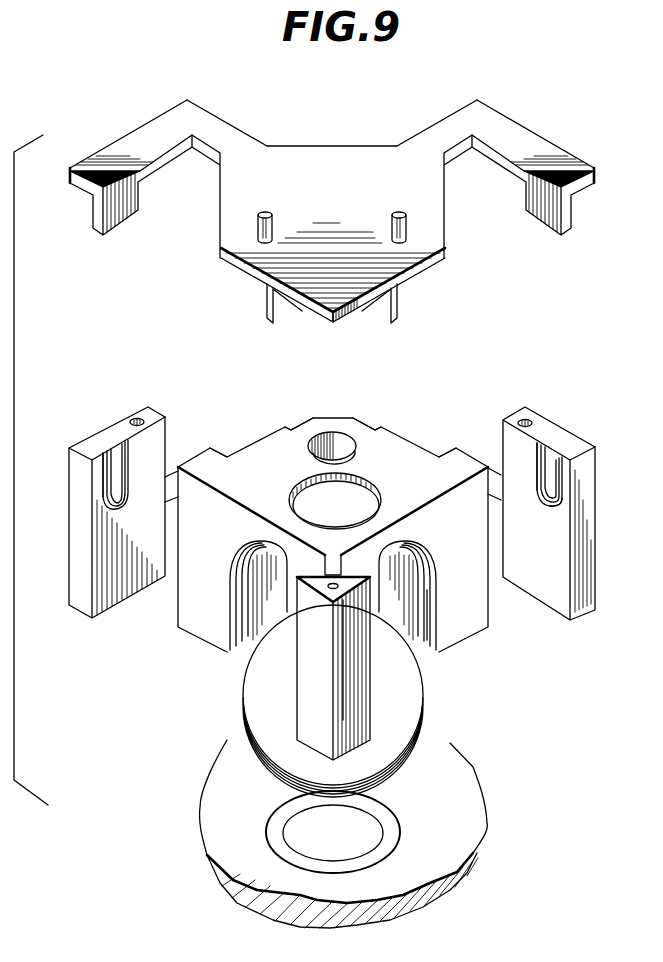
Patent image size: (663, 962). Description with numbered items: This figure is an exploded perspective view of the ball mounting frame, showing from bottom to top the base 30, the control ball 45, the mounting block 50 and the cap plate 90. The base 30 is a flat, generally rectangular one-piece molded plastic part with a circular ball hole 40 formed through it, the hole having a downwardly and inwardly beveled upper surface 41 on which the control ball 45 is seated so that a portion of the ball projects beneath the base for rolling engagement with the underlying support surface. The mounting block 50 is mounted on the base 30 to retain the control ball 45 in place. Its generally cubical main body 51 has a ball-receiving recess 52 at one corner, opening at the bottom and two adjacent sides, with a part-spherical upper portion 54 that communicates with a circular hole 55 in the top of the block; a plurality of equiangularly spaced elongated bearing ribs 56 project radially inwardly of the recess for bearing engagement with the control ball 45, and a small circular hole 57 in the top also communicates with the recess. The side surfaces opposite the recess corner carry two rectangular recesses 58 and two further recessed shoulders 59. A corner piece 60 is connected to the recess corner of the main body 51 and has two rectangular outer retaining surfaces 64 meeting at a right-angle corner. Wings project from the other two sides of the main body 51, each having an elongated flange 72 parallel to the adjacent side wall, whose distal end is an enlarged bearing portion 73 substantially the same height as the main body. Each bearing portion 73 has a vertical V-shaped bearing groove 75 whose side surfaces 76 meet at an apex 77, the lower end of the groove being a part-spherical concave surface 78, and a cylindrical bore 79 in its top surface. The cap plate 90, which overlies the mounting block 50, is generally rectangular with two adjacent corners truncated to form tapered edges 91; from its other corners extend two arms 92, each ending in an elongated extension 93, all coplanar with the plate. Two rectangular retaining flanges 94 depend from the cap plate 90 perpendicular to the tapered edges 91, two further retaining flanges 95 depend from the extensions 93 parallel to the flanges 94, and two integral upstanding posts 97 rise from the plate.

The base 30 is at (371, 850).
The ball hole 40 is at (375, 835).
The beveled upper surface 41 is at (363, 863).
The control ball 45 is at (267, 700).
The mounting block 50 is at (347, 515).
The main body 51 is at (262, 462).
The ball-receiving recess 52 is at (263, 603).
The part-spherical upper portion 54 is at (403, 545).
The circular hole 55 is at (365, 482).
The bearing ribs 56 is at (423, 590).
The small circular hole 57 is at (342, 438).
The rectangular recesses 58 is at (226, 455).
The recessed shoulders 59 is at (288, 422).
The corner piece 60 is at (353, 685).
The outer retaining surfaces 64 is at (322, 730).
The flange 72 is at (172, 470).
The bearing portion 73 is at (334, 495).
The bearing grooves 75 is at (115, 487).
The side surfaces 76 is at (568, 442).
The apex 77 is at (107, 442).
The part-spherical concave surface 78 is at (548, 505).
The cylindrical bore 79 is at (137, 419).
The cap plate 90 is at (352, 172).
The tapered edges 91 is at (345, 318).
The arms 92 is at (225, 140).
The extension 93 is at (128, 147).
The retaining flanges 94 is at (267, 308).
The retaining flanges 95 is at (93, 218).
The upstanding posts 97 is at (392, 222).